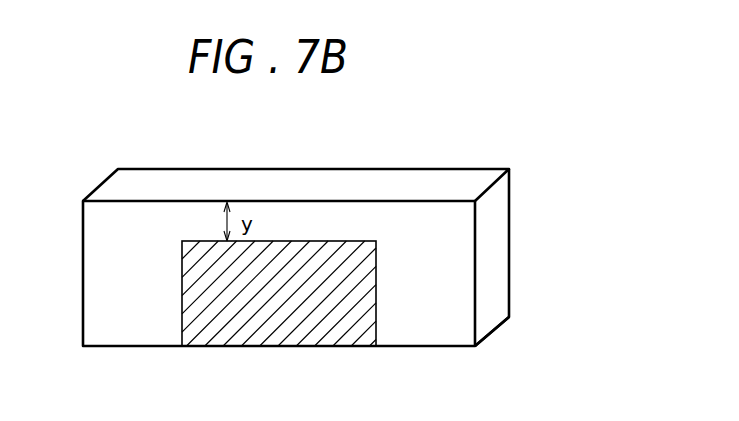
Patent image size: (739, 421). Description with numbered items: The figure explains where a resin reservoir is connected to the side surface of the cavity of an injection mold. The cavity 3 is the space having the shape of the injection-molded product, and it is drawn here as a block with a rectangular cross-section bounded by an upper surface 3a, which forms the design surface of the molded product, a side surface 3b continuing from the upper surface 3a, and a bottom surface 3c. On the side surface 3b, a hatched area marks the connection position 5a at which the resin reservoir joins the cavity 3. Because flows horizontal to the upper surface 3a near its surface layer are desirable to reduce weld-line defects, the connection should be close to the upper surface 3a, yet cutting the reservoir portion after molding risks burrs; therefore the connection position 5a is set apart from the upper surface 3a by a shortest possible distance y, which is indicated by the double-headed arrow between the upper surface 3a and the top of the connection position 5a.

The cavity 3 is at (331, 250).
The upper surface 3a is at (372, 183).
The side surface 3b is at (510, 228).
The bottom surface 3c is at (493, 333).
The connection position 5a is at (242, 341).